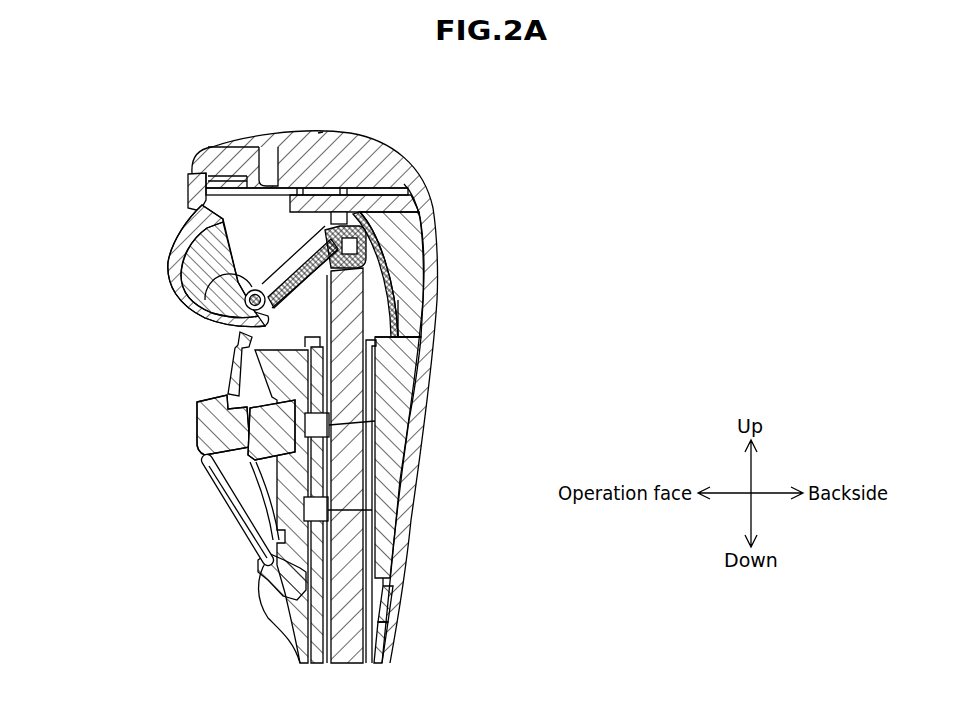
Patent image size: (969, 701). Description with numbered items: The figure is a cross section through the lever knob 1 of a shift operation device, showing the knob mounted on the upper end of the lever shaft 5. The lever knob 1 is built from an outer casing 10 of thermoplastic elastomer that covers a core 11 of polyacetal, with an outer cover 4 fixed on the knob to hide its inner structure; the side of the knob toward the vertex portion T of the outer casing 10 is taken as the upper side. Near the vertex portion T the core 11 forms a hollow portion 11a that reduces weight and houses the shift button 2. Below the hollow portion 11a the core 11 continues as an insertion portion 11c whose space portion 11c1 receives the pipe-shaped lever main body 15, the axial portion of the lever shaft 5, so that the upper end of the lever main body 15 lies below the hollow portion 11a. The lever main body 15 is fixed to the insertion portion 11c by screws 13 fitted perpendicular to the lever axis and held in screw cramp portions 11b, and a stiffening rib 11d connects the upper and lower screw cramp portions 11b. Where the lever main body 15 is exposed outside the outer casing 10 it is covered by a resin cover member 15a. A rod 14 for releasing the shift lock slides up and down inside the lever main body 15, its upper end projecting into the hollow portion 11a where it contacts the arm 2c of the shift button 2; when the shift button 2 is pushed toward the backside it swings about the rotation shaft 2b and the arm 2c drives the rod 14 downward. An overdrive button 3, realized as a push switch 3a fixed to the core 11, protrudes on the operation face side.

The lever knob 1 is at (504, 158).
The shift button 2 is at (292, 275).
The rotation shaft 2b is at (212, 320).
The arm 2c is at (367, 262).
The overdrive button 3 is at (200, 419).
The push switch 3a is at (214, 468).
The outer cover 4 is at (190, 197).
The lever shaft 5 is at (392, 652).
The outer casing 10 is at (352, 150).
The core 11 is at (405, 250).
The hollow portion 11a is at (267, 210).
The screw cramp portion 11b is at (272, 537).
The insertion portion 11c is at (390, 538).
The space portion 11c1 is at (404, 354).
The stiffening rib 11d is at (238, 378).
The screw 13 is at (372, 510).
The rod 14 is at (325, 334).
The lever main body 15 is at (373, 372).
The cover member 15a is at (393, 631).
The vertex portion T is at (321, 134).